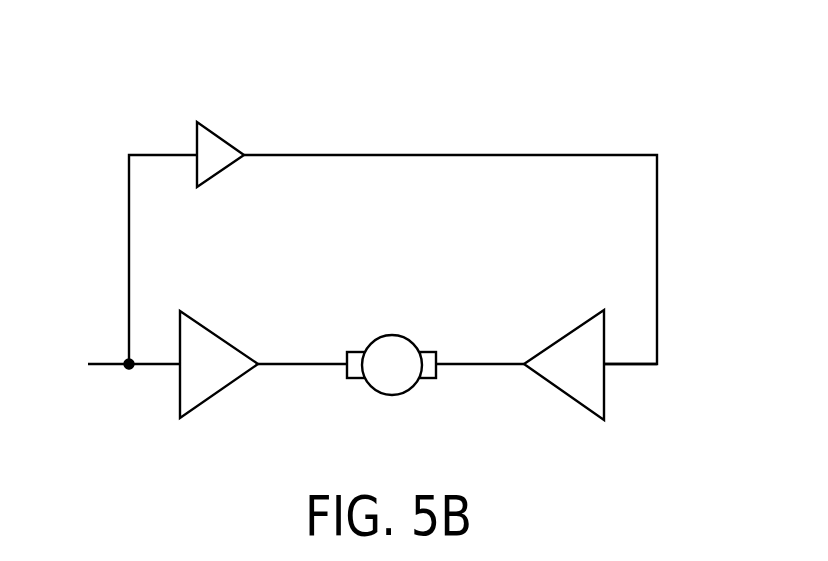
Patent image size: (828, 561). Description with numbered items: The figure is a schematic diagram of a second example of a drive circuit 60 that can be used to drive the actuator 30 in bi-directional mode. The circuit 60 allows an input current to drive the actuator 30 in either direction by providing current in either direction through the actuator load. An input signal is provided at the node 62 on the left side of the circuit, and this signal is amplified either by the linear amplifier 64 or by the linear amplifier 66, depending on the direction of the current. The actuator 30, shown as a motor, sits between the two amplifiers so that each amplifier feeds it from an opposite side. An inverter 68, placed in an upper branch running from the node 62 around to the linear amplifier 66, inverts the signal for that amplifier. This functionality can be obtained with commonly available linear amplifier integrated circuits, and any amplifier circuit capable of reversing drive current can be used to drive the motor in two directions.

The actuator 30 is at (401, 313).
The drive circuit 60 is at (639, 427).
The node 62 is at (124, 396).
The linear amplifier 64 is at (222, 379).
The linear amplifier 66 is at (588, 380).
The inverter 68 is at (214, 152).